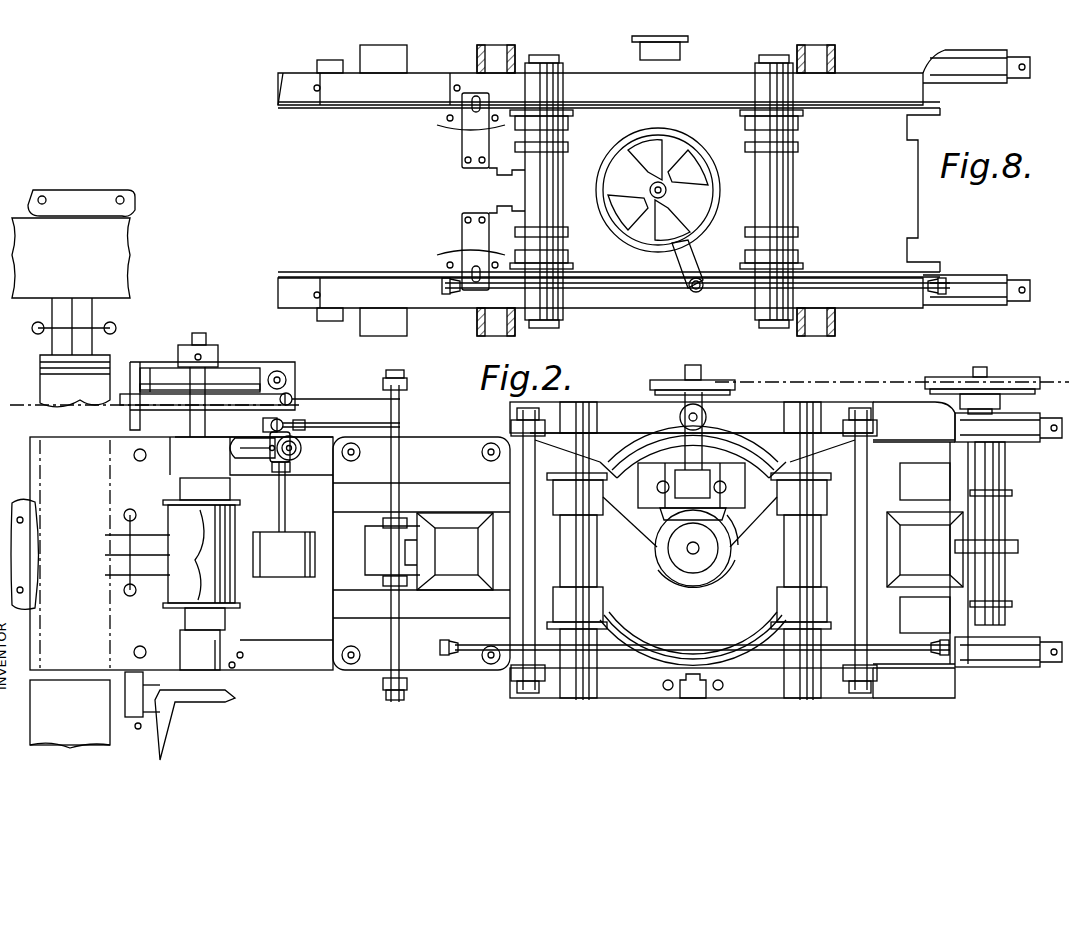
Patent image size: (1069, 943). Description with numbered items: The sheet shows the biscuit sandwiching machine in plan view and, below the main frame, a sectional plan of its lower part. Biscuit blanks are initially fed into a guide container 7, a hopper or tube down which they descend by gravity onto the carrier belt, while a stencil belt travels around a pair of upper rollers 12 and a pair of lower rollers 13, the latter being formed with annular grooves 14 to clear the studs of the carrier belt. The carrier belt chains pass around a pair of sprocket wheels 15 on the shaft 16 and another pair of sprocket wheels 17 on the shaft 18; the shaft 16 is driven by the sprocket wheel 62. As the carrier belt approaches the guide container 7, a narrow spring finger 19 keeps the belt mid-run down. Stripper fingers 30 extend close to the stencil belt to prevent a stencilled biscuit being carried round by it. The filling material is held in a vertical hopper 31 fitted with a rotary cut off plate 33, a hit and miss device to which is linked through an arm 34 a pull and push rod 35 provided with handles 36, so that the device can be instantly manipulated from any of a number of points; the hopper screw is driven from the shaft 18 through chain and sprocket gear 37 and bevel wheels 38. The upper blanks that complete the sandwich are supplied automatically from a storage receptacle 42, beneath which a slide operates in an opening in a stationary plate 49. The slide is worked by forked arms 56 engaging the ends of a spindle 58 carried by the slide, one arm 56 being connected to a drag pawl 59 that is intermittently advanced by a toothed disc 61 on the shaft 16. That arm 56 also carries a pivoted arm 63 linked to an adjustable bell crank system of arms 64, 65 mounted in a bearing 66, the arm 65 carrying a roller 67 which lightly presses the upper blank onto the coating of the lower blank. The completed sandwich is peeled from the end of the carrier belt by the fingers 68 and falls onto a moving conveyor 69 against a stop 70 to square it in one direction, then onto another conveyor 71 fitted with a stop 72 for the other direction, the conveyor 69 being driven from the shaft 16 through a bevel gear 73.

In FIG. 2, the guide container 7 is at (927, 553).
In FIG. 2, the upper rollers 12 is at (689, 551).
In FIG. 8, the lower rollers 13 is at (556, 180).
In FIG. 8, the annular grooves 14 is at (560, 134).
In FIG. 2, the sprocket wheels 15 is at (201, 574).
In FIG. 2, the shaft 16 is at (208, 335).
In FIG. 2, the sprocket wheels 17 is at (1012, 490).
In FIG. 2, the shaft 18 is at (985, 367).
In FIG. 2, the spring finger 19 is at (986, 533).
In FIG. 8, the stripper fingers 30 is at (481, 191).
In FIG. 8, the vertical hopper 31 is at (633, 140).
In FIG. 2, the vertical hopper 31 is at (693, 546).
In FIG. 8, the rotary cut off plate 33 is at (680, 170).
In FIG. 8, the arm 34 is at (692, 258).
In FIG. 8, the pull and push rod 35 is at (617, 290).
In FIG. 2, the pull and push rod 35 is at (472, 644).
In FIG. 8, the handles 36 is at (440, 288).
In FIG. 2, the handles 36 is at (440, 646).
In FIG. 2, the chain and sprocket gear 37 is at (718, 378).
In FIG. 2, the bevel wheels 38 is at (727, 553).
In FIG. 2, the storage receptacle 42 is at (429, 551).
In FIG. 2, the stationary plate 49 is at (466, 452).
In FIG. 2, the forked arms 56 is at (375, 395).
In FIG. 2, the spindle 58 is at (400, 455).
In FIG. 2, the drag pawl 59 is at (325, 393).
In FIG. 2, the toothed disc 61 is at (120, 398).
In FIG. 2, the sprocket wheel 62 is at (262, 368).
In FIG. 2, the arm 63 is at (322, 422).
In FIG. 2, the bell crank arm 64 is at (262, 423).
In FIG. 2, the bell crank arm 65 is at (290, 470).
In FIG. 2, the bearing 66 is at (232, 448).
In FIG. 2, the roller 67 is at (284, 554).
In FIG. 2, the fingers 68 is at (105, 545).
In FIG. 2, the moving conveyor 69 is at (105, 468).
In FIG. 2, the stop 70 is at (25, 554).
In FIG. 2, the conveyor 71 is at (122, 278).
In FIG. 2, the stop 72 is at (81, 203).
In FIG. 2, the bevel gear 73 is at (192, 700).